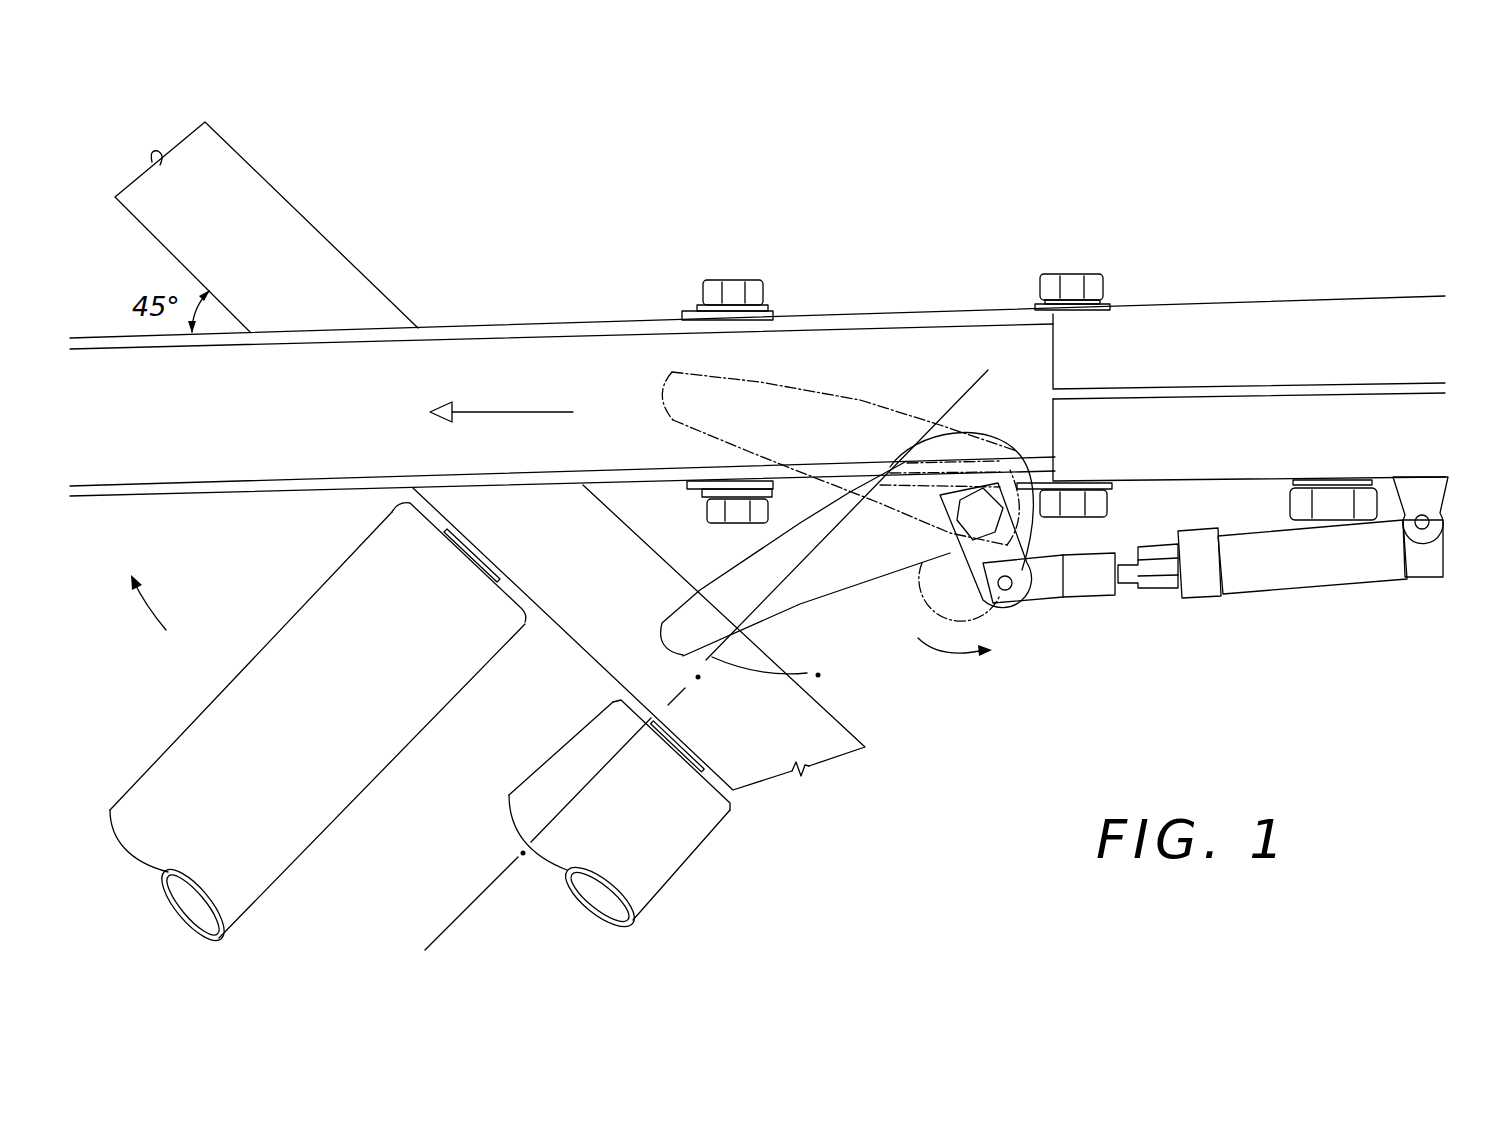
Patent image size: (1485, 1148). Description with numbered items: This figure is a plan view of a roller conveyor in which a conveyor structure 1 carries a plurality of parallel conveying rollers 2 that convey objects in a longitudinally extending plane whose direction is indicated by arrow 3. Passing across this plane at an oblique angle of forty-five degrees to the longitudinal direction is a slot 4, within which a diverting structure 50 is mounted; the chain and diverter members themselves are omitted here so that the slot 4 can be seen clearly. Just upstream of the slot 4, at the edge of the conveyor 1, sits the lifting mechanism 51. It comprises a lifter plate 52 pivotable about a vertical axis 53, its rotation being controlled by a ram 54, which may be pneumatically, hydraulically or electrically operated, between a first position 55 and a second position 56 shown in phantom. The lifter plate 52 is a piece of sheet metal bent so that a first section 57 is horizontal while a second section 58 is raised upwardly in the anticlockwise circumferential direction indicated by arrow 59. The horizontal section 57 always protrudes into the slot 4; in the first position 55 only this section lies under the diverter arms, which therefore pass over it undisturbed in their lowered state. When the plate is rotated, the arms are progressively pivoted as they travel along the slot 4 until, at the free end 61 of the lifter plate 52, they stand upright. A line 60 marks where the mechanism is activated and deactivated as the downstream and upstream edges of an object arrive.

The conveyor structure 1 is at (740, 884).
The conveying rollers 2 is at (437, 700).
The arrow 3 is at (159, 602).
The slot 4 is at (474, 361).
The diverting structure 50 is at (903, 273).
The lifting mechanism 51 is at (1108, 609).
The lifter plate 52 is at (890, 577).
The vertical axis 53 is at (1040, 540).
The ram 54 is at (1295, 592).
The first position 55 is at (722, 580).
The second position 56 is at (818, 390).
The first section 57 is at (873, 515).
The second section 58 is at (755, 592).
The arrow 59 is at (957, 653).
The line 60 is at (830, 681).
The free end 61 is at (668, 378).